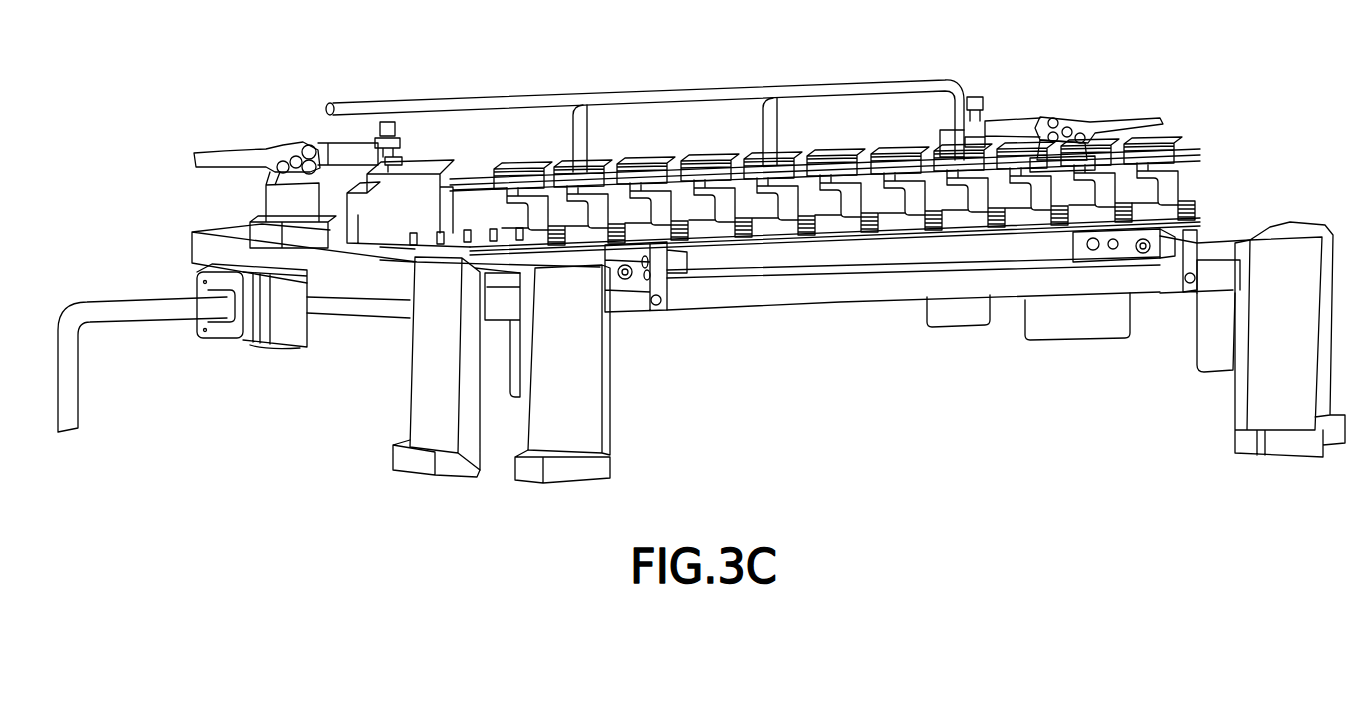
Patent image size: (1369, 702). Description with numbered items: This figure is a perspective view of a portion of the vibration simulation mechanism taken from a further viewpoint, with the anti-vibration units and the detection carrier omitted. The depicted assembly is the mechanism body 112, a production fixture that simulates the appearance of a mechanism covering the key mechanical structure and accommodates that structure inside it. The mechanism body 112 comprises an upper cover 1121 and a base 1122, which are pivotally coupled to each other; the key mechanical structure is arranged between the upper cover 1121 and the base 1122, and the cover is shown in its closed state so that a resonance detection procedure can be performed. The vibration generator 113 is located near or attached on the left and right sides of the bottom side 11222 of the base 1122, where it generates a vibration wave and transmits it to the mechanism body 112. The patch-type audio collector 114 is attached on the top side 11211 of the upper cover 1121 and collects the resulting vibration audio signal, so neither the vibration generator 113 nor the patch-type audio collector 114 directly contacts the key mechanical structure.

The mechanism body 112 is at (678, 218).
The upper cover 1121 is at (940, 238).
The base 1122 is at (866, 292).
The top side of the upper cover 11211 is at (1157, 173).
The bottom side of the base 11222 is at (780, 310).
The vibration generator 113 is at (493, 343).
The patch-type audio collector 114 is at (876, 75).